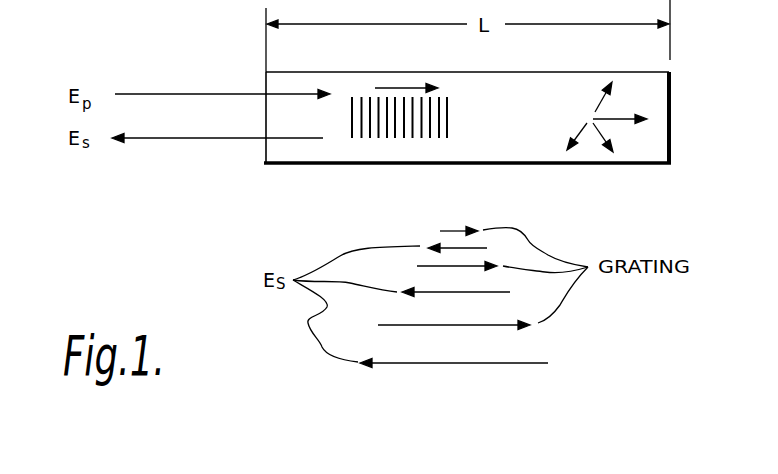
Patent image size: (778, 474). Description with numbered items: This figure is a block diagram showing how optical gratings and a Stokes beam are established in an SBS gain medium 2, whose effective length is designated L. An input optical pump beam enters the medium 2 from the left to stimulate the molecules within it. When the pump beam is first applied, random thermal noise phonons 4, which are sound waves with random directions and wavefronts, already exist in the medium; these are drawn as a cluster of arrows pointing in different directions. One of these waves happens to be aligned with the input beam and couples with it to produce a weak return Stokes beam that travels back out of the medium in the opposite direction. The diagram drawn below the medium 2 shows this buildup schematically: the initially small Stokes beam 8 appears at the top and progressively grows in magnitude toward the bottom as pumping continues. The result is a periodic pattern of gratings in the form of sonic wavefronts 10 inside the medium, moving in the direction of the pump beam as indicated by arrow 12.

The SBS medium 2 is at (525, 102).
The thermal noise phonons 4 is at (638, 151).
The Stokes beam 8 is at (447, 245).
The sonic wavefronts 10 is at (450, 91).
The arrow 12 is at (393, 88).